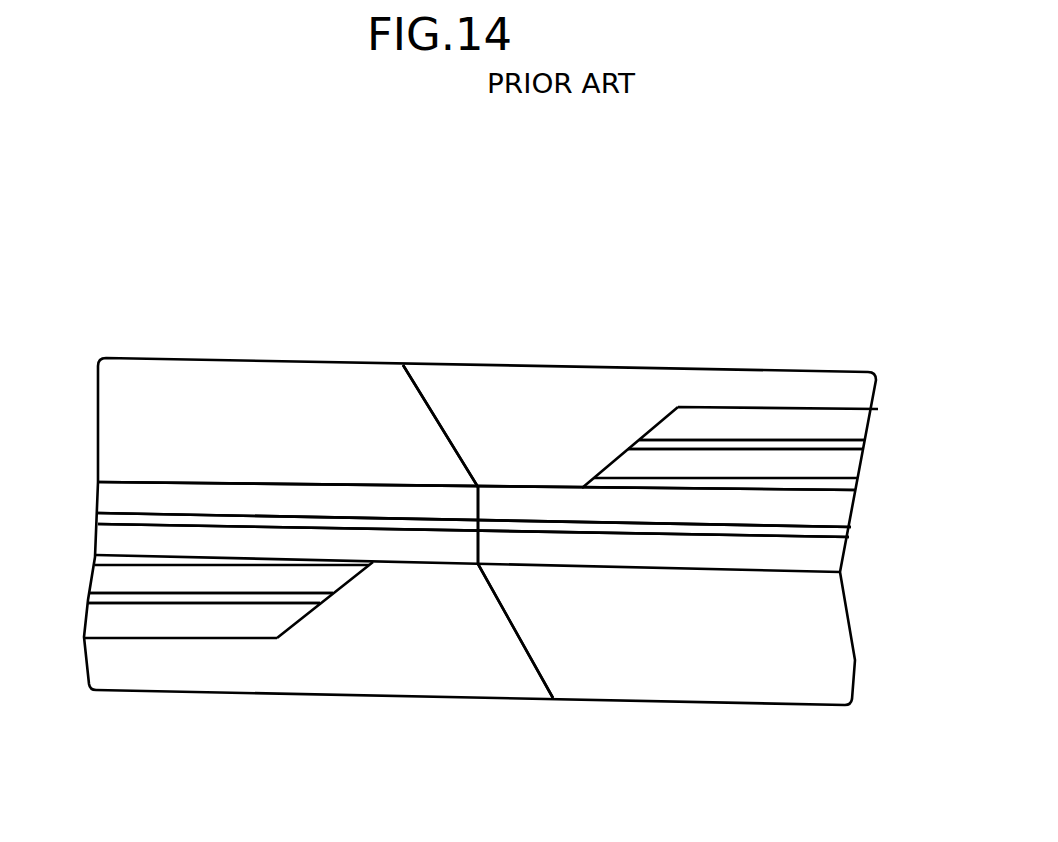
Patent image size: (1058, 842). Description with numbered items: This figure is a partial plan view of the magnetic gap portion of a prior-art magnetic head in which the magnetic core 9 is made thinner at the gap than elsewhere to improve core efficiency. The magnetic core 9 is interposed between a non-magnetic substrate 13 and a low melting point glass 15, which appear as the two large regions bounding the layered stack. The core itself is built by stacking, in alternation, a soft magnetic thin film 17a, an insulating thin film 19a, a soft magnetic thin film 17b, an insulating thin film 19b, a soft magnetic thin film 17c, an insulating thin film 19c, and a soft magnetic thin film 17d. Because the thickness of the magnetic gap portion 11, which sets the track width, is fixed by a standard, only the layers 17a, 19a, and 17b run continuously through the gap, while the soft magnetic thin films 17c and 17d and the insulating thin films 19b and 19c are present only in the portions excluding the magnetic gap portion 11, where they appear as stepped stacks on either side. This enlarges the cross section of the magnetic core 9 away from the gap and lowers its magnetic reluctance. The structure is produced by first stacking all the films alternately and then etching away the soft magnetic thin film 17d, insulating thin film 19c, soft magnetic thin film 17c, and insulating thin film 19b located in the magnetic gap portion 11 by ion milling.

The magnetic core 9 is at (311, 478).
The magnetic gap portion 11 is at (483, 503).
The non-magnetic substrate 13 is at (207, 382).
The low melting point glass 15 is at (481, 393).
The soft magnetic thin film 17a is at (148, 482).
The soft magnetic thin film 17b is at (108, 537).
The soft magnetic thin film 17c is at (100, 578).
The soft magnetic thin film 17d is at (163, 622).
The insulating thin film 19a is at (98, 515).
The insulating thin film 19b is at (97, 557).
The insulating thin film 19c is at (90, 600).